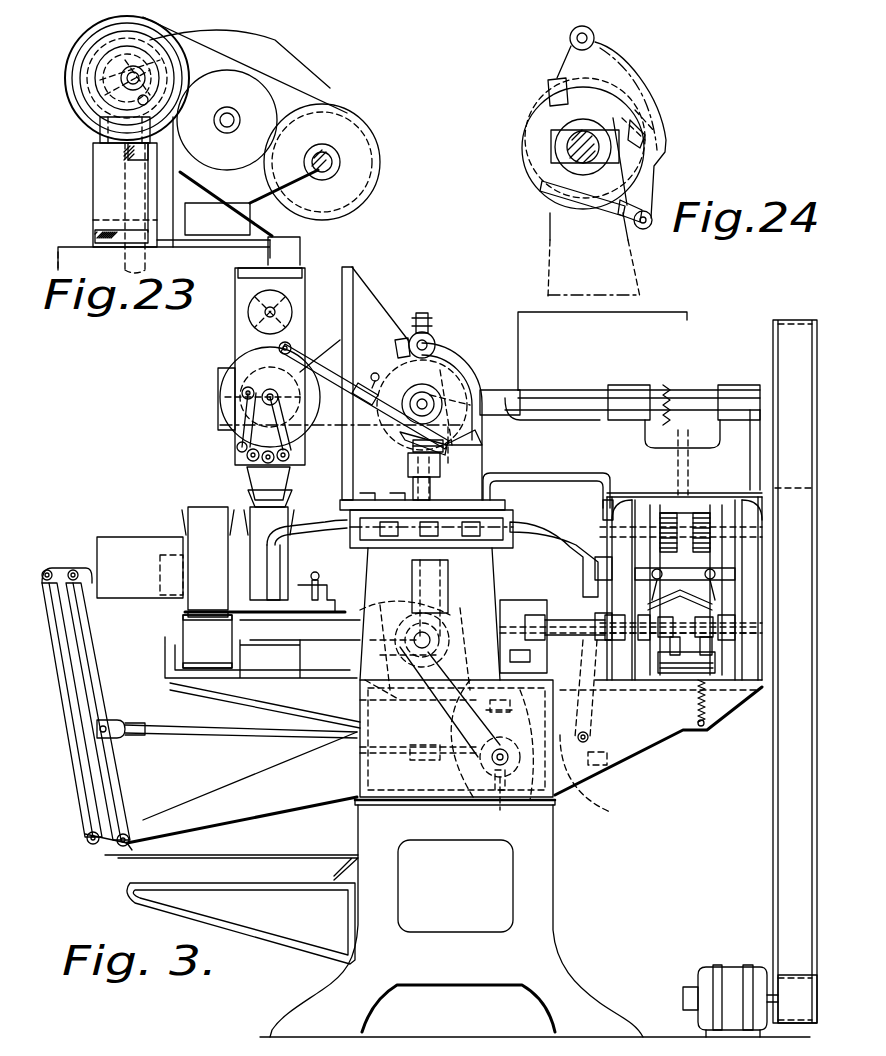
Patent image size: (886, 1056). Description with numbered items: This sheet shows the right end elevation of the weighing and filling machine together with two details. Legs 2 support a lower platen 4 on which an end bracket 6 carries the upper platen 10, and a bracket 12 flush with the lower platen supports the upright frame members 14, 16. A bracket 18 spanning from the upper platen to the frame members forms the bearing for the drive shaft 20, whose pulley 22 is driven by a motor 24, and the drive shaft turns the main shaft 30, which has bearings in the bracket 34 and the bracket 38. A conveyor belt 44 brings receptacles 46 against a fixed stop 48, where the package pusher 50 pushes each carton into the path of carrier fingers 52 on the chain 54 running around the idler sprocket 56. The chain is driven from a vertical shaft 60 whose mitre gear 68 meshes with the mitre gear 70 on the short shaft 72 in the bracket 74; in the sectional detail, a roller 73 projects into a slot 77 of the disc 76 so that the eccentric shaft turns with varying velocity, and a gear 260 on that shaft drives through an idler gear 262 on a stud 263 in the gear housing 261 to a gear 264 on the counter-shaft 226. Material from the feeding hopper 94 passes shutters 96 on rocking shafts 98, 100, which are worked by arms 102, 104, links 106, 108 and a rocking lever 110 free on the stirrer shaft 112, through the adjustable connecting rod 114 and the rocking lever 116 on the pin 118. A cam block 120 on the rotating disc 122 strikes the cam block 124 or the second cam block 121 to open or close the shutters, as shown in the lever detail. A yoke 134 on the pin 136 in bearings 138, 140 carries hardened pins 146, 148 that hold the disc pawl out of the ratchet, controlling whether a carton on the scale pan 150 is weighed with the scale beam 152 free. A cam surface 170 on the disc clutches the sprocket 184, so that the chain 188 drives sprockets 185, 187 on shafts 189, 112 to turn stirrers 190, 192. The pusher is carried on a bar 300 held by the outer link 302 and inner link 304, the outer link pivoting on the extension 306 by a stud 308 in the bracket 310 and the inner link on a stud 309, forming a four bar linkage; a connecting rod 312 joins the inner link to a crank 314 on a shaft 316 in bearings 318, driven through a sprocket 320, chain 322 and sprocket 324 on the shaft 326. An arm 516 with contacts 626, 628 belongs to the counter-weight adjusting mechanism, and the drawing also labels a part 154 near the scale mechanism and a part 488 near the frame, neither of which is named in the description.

In FIG. 3, the legs 2 is at (557, 878).
In FIG. 3, the lower platen 4 is at (558, 806).
In FIG. 3, the end bracket 6 is at (494, 568).
In FIG. 23, the upper platen 10 is at (72, 247).
In FIG. 3, the upper platen 10 is at (686, 312).
In FIG. 3, the bracket 12 is at (665, 738).
In FIG. 3, the upright frame member 14 is at (602, 513).
In FIG. 3, the upright frame member 16 is at (764, 514).
In FIG. 3, the bracket 18 is at (612, 386).
In FIG. 3, the drive shaft 20 is at (606, 410).
In FIG. 3, the pulley 22 is at (773, 350).
In FIG. 3, the motor 24 is at (704, 966).
In FIG. 23, the main shaft 30 is at (82, 52).
In FIG. 24, the main shaft 30 is at (566, 147).
In FIG. 3, the main shaft 30 is at (446, 392).
In FIG. 23, the bracket 34 is at (93, 168).
In FIG. 24, the bracket 38 is at (548, 277).
In FIG. 3, the bracket 38 is at (522, 412).
In FIG. 3, the conveyor belt 44 is at (185, 614).
In FIG. 3, the receptacles 46 is at (200, 506).
In FIG. 3, the fixed stop 48 is at (170, 540).
In FIG. 3, the package pusher 50 is at (106, 537).
In FIG. 3, the carrier fingers 52 is at (582, 580).
In FIG. 3, the chain 54 is at (500, 478).
In FIG. 3, the idler sprocket 56 is at (443, 500).
In FIG. 23, the vertical shaft 60 is at (125, 192).
In FIG. 23, the mitre gear 68 is at (100, 126).
In FIG. 23, the mitre gear 70 is at (85, 38).
In FIG. 23, the short shaft 72 is at (122, 98).
In FIG. 23, the roller 73 is at (150, 86).
In FIG. 23, the bracket 74 is at (88, 68).
In FIG. 23, the disc 76 is at (96, 90).
In FIG. 23, the slot 77 is at (138, 76).
In FIG. 3, the feeding hopper 94 is at (235, 330).
In FIG. 3, the shutters 96 is at (258, 466).
In FIG. 3, the rocking shaft 98 is at (247, 456).
In FIG. 3, the rocking shaft 100 is at (290, 455).
In FIG. 3, the arm 102 is at (250, 438).
In FIG. 3, the arm 104 is at (288, 480).
In FIG. 3, the link 106 is at (248, 418).
In FIG. 3, the link 108 is at (242, 420).
In FIG. 3, the rocking lever 110 is at (278, 362).
In FIG. 3, the stirrer shaft 112 is at (240, 388).
In FIG. 24, the adjustable connecting rod 114 is at (552, 210).
In FIG. 3, the adjustable connecting rod 114 is at (342, 372).
In FIG. 24, the rocking lever 116 is at (650, 188).
In FIG. 3, the rocking lever 116 is at (470, 440).
In FIG. 24, the pin 118 is at (596, 38).
In FIG. 3, the pin 118 is at (418, 333).
In FIG. 24, the cam block 120 is at (648, 132).
In FIG. 3, the cam block 120 is at (402, 438).
In FIG. 24, the second cam block 121 is at (552, 78).
In FIG. 3, the second cam block 121 is at (400, 338).
In FIG. 24, the rotating disc 122 is at (530, 112).
In FIG. 3, the rotating disc 122 is at (400, 360).
In FIG. 24, the cam block 124 is at (652, 110).
In FIG. 3, the cam block 124 is at (462, 396).
In FIG. 3, the yoke 134 is at (470, 342).
In FIG. 3, the pin 136 is at (506, 400).
In FIG. 3, the bearing 138 is at (520, 392).
In FIG. 3, the bearing 140 is at (500, 408).
In FIG. 3, the hardened pin 146 is at (428, 318).
In FIG. 3, the hardened pin 148 is at (410, 476).
In FIG. 3, the scale pan 150 is at (262, 626).
In FIG. 3, the scale beam 152 is at (326, 594).
In FIG. 3, the shaft 154 is at (540, 656).
In FIG. 3, the cam surface 170 is at (416, 448).
In FIG. 3, the sprocket 184 is at (470, 362).
In FIG. 3, the sprocket 185 is at (302, 276).
In FIG. 3, the sprocket 187 is at (218, 373).
In FIG. 3, the chain 188 is at (353, 270).
In FIG. 3, the shaft 189 is at (250, 318).
In FIG. 3, the stirrer 190 is at (236, 282).
In FIG. 3, the stirrer 192 is at (245, 396).
In FIG. 23, the counter-shaft 226 is at (326, 160).
In FIG. 23, the gear 260 is at (240, 44).
In FIG. 23, the gear housing 261 is at (336, 108).
In FIG. 23, the idler gear 262 is at (268, 90).
In FIG. 23, the stud 263 is at (230, 115).
In FIG. 23, the gear 264 is at (345, 120).
In FIG. 3, the bar 300 is at (50, 566).
In FIG. 3, the outer link 302 is at (62, 724).
In FIG. 3, the inner link 304 is at (172, 686).
In FIG. 3, the extension 306 is at (112, 870).
In FIG. 3, the stud 308 is at (70, 842).
In FIG. 3, the stud 309 is at (146, 912).
In FIG. 3, the bracket 310 is at (196, 800).
In FIG. 3, the connecting rod 312 is at (240, 740).
In FIG. 3, the crank 314 is at (492, 766).
In FIG. 3, the shaft 316 is at (438, 766).
In FIG. 3, the bearings 318 is at (515, 800).
In FIG. 3, the sprocket 320 is at (486, 800).
In FIG. 3, the chain 322 is at (452, 704).
In FIG. 3, the sprocket 324 is at (362, 692).
In FIG. 3, the shaft 326 is at (420, 668).
In FIG. 3, the spring 488 is at (712, 712).
In FIG. 3, the arm 516 is at (600, 698).
In FIG. 3, the contact 626 is at (582, 794).
In FIG. 3, the contact 628 is at (596, 774).